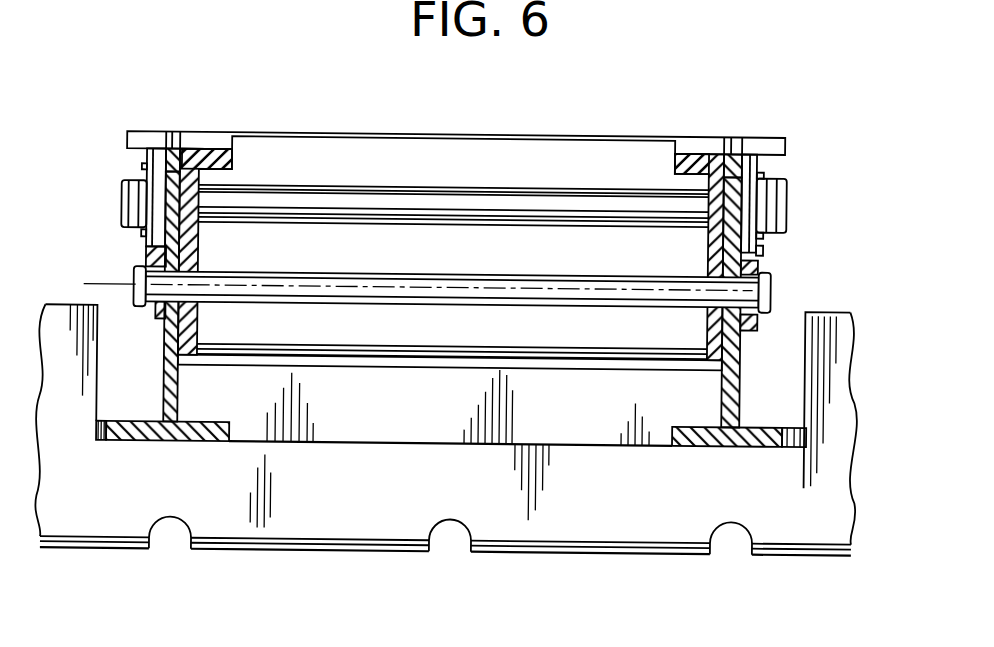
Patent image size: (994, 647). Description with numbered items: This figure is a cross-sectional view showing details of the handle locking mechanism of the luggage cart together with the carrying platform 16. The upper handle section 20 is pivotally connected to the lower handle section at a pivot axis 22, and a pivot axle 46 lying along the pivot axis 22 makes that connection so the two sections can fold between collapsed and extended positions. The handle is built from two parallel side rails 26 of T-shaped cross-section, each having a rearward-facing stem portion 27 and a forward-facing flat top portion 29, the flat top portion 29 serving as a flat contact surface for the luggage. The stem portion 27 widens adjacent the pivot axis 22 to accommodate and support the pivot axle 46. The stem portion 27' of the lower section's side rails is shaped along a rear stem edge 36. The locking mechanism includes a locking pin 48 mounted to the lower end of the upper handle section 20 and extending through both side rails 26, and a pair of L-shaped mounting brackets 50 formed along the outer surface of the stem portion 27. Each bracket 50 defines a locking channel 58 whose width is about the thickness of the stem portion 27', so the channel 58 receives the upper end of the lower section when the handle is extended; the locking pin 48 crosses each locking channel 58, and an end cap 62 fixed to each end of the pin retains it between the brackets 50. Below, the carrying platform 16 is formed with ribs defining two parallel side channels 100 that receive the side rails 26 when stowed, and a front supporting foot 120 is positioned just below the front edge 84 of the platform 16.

The carrying platform 16 is at (561, 562).
The upper handle section 20 is at (230, 152).
The pivot axis 22 is at (100, 288).
The side rails 26 is at (173, 358).
The stem portion 27 is at (449, 383).
The stem portion of lower handle section side rails 27' is at (481, 299).
The flat top portion 29 is at (173, 444).
The rear stem edge 36 is at (760, 246).
The pivot axle 46 is at (476, 290).
The locking pin 48 is at (497, 213).
The L-shaped mounting brackets 50 is at (157, 176).
The locking channel 58 is at (173, 160).
The end cap 62 is at (130, 197).
The front edge 84 is at (683, 535).
The side channels 100 is at (790, 358).
The front supporting foot 120 is at (355, 552).